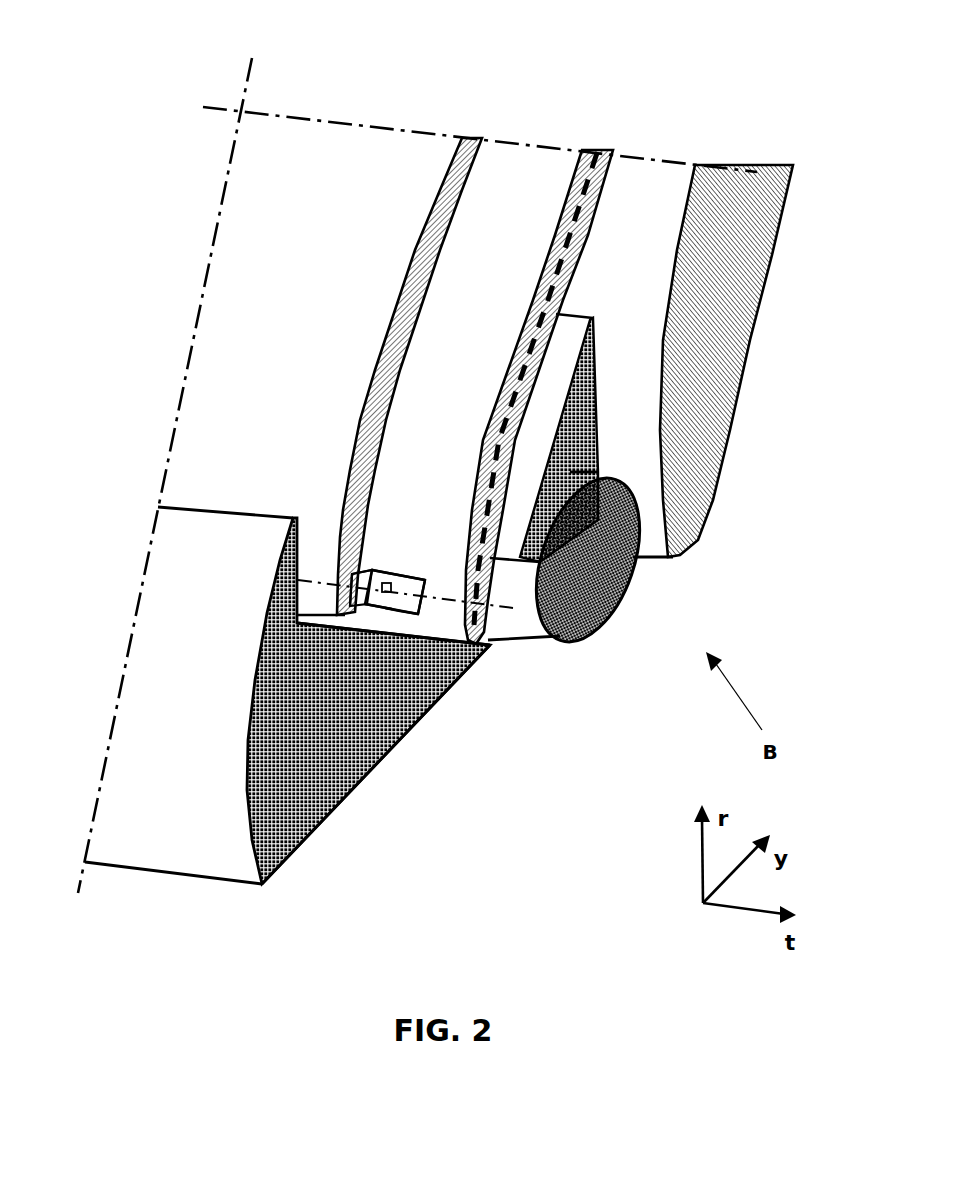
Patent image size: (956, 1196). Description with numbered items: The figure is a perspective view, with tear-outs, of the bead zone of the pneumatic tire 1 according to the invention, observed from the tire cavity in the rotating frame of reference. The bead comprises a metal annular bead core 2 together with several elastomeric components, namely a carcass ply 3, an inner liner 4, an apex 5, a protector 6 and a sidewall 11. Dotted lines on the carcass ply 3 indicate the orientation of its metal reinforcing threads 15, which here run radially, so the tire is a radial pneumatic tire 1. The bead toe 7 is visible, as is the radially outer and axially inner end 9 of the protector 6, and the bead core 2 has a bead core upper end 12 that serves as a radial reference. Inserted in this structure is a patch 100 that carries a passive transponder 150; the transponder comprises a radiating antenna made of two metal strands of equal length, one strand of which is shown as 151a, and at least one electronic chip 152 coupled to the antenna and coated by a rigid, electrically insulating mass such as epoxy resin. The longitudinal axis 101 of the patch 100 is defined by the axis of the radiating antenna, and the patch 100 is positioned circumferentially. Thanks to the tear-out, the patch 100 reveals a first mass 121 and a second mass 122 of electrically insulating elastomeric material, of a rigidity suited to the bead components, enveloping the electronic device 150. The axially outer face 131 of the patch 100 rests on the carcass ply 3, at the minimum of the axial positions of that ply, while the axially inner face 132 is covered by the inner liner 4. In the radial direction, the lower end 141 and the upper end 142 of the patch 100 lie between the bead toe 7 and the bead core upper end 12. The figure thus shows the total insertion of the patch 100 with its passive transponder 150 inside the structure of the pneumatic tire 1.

The pneumatic tire 1 is at (417, 108).
The metal annular bead core 2 is at (617, 593).
The carcass ply 3 is at (565, 640).
The inner liner 4 is at (298, 237).
The apex 5 is at (575, 407).
The protector 6 is at (297, 790).
The bead toe 7 is at (267, 887).
The radially outer and axially inner end of the protector 9 is at (292, 520).
The sidewall 11 is at (703, 277).
The bead core upper end 12 is at (643, 500).
The metal reinforcing threads 15 is at (560, 222).
The patch 100 is at (379, 545).
The longitudinal axis of the patch 101 is at (468, 650).
The first mass 121 is at (403, 587).
The second mass 122 is at (350, 562).
The axially outer face of the patch 131 is at (428, 613).
The axially inner face of the patch 132 is at (342, 563).
The lower end of the patch 141 is at (378, 612).
The upper end of the patch 142 is at (388, 570).
The passive transponder 150 is at (372, 604).
The strand of the radiating antenna 151a is at (412, 614).
The electronic chip 152 is at (390, 612).